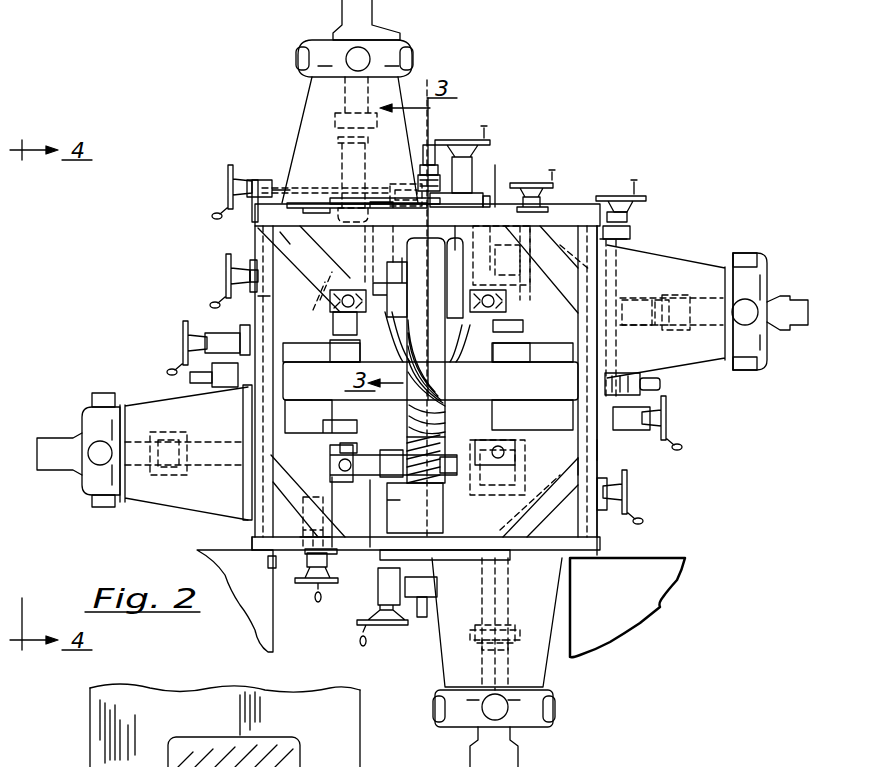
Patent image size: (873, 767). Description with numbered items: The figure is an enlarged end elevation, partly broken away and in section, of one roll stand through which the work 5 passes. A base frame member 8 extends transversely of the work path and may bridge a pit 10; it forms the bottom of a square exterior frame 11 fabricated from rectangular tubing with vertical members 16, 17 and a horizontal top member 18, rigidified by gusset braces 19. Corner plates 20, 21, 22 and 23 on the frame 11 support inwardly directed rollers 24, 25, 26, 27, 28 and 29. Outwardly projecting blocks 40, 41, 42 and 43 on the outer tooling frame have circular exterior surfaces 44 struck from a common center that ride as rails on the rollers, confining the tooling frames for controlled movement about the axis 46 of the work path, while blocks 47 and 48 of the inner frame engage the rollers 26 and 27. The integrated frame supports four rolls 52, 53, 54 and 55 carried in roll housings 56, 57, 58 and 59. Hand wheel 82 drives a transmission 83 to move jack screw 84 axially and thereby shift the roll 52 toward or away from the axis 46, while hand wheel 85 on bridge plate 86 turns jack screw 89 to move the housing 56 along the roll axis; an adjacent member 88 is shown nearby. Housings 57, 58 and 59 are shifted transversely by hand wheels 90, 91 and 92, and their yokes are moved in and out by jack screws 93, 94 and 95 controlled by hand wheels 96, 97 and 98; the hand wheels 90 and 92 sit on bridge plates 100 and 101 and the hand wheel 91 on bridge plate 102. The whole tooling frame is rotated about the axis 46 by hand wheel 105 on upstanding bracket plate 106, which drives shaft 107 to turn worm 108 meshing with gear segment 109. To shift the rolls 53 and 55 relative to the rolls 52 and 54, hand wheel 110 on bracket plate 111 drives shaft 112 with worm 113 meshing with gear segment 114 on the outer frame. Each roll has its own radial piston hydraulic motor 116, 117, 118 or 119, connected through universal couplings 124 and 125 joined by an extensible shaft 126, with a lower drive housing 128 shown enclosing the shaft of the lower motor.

The work 5 is at (426, 377).
The base frame member 8 is at (588, 560).
The pit 10 is at (277, 632).
The square exterior frame 11 is at (566, 201).
The vertical member 16 is at (592, 535).
The vertical member 17 is at (262, 525).
The horizontal top member 18 is at (495, 190).
The gusset brace 19 is at (316, 250).
The corner plate 20 is at (278, 310).
The corner plate 21 is at (512, 325).
The corner plate 22 is at (583, 470).
The corner plate 23 is at (276, 422).
The roller 24 is at (330, 262).
The roller 25 is at (584, 250).
The roller 26 is at (600, 455).
The roller 27 is at (265, 455).
The roller 28 is at (533, 525).
The roller 29 is at (340, 565).
The outwardly projecting block 40 is at (402, 268).
The outwardly projecting block 41 is at (530, 265).
The outwardly projecting block 42 is at (505, 500).
The outwardly projecting block 43 is at (360, 473).
The circular exterior surface 44 is at (380, 227).
The axis of the work path 46 is at (430, 381).
The outwardly projecting block 47 is at (308, 410).
The outwardly projecting block 48 is at (542, 425).
The roll 52 is at (415, 317).
The roll 53 is at (480, 362).
The roll 54 is at (407, 416).
The roll 55 is at (397, 360).
The roll housing 56 is at (478, 182).
The roll housing 57 is at (638, 321).
The roll housing 58 is at (450, 563).
The roll housing 59 is at (240, 330).
The hand wheel 82 is at (462, 140).
The transmission 83 is at (424, 165).
The jack screw 84 is at (425, 152).
The hand wheel 85 is at (528, 182).
The bridge plate 86 is at (548, 212).
The control shaft 88 is at (501, 241).
The jack screw 89 is at (466, 231).
The hand wheel 90 is at (630, 495).
The hand wheel 91 is at (312, 590).
The hand wheel 92 is at (228, 270).
The jack screw 93 is at (662, 383).
The jack screw 94 is at (422, 617).
The jack screw 95 is at (188, 376).
The hand wheel 96 is at (672, 416).
The hand wheel 97 is at (391, 627).
The hand wheel 98 is at (185, 350).
The bridge plate 100 is at (600, 505).
The bridge plate 101 is at (253, 262).
The bridge plate 102 is at (272, 566).
The hand wheel 105 is at (228, 185).
The upstanding bracket plate 106 is at (255, 178).
The shaft 107 is at (302, 186).
The worm 108 is at (430, 180).
The gear segment 109 is at (420, 198).
The hand wheel 110 is at (640, 197).
The bracket plate 111 is at (628, 229).
The shaft 112 is at (625, 262).
The worm 113 is at (632, 373).
The gear segment 114 is at (628, 433).
The hydraulic motor 116 is at (395, 42).
The hydraulic motor 117 is at (765, 268).
The hydraulic motor 118 is at (535, 725).
The hydraulic motor 119 is at (88, 480).
The universal coupling 124 is at (510, 636).
The universal coupling 125 is at (486, 455).
The extensible shaft 126 is at (510, 583).
The lower housing 128 is at (555, 664).